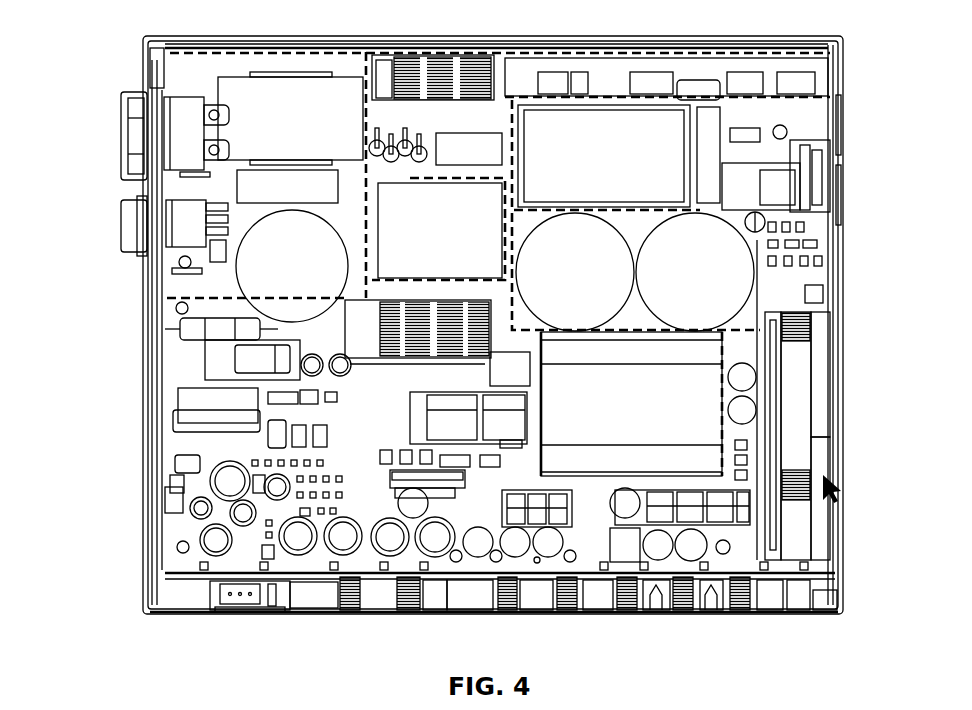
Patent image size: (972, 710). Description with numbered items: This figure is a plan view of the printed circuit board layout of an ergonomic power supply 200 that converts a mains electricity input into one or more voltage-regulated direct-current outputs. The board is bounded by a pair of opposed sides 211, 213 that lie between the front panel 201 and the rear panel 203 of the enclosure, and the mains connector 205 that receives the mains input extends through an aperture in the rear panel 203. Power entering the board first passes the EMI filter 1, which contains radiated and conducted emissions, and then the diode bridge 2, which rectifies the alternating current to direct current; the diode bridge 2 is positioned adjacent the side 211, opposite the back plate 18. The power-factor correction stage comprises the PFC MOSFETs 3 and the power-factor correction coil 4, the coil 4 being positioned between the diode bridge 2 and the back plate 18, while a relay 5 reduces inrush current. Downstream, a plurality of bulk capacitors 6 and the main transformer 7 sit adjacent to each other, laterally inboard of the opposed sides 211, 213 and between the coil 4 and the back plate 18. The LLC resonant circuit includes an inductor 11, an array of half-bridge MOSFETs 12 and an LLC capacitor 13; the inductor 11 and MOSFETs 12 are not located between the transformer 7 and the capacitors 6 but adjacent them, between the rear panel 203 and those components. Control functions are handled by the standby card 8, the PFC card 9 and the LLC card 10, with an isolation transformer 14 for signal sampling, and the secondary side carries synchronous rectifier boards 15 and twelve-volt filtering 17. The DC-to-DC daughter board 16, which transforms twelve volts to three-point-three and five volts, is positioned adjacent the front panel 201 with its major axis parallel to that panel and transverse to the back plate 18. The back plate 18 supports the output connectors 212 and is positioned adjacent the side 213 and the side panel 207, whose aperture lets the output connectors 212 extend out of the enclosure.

The EMI filter 1 is at (263, 126).
The diode bridge 2 is at (432, 75).
The PFC MOSFETs 3 is at (665, 75).
The power-factor correction coil 4 is at (616, 155).
The relay 5 is at (761, 186).
The bulk capacitors 6 is at (636, 272).
The main transformer 7 is at (648, 402).
The standby card 8 is at (232, 349).
The PFC card 9 is at (811, 158).
The LLC card 10 is at (408, 492).
The inductor 11 is at (437, 229).
The array of half-bridge MOSFETs 12 is at (418, 331).
The LLC capacitor 13 is at (509, 349).
The isolation transformer 14 is at (448, 417).
The synchronous rectifier boards 15 is at (518, 507).
The DC-to-DC daughter board 16 is at (797, 417).
The 12 V filtering 17 is at (662, 507).
The back plate 18 is at (228, 597).
The power supply 200 is at (78, 44).
The front panel 201 is at (846, 420).
The rear panel 203 is at (137, 374).
The mains connector 205 is at (118, 116).
The side panel 207 is at (316, 615).
The side 211 is at (578, 36).
The output connectors 212 is at (620, 624).
The side 213 is at (254, 613).